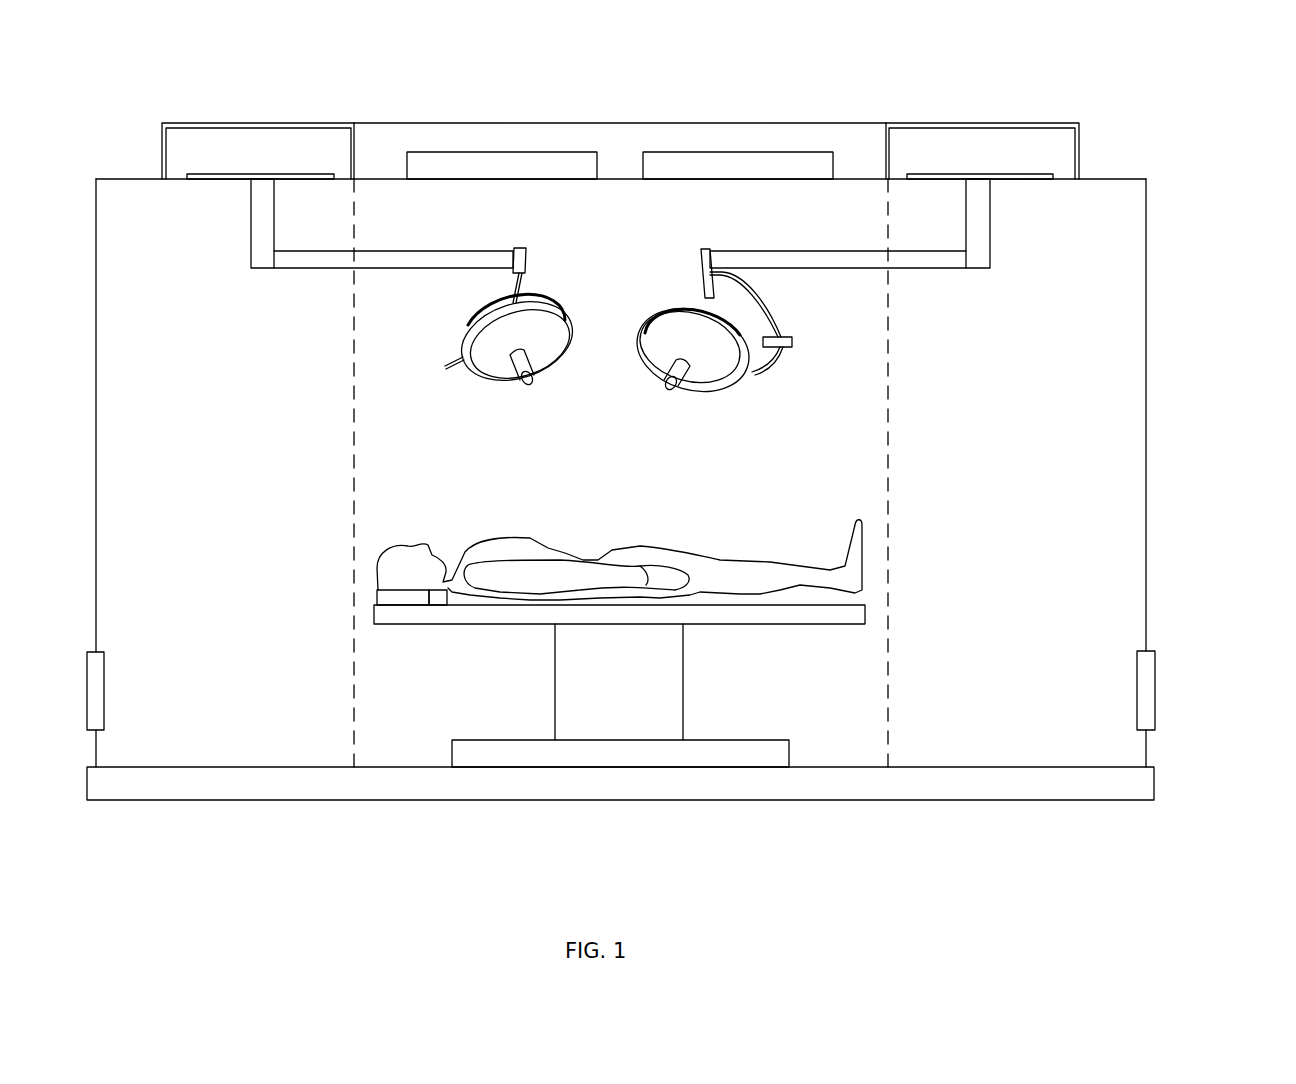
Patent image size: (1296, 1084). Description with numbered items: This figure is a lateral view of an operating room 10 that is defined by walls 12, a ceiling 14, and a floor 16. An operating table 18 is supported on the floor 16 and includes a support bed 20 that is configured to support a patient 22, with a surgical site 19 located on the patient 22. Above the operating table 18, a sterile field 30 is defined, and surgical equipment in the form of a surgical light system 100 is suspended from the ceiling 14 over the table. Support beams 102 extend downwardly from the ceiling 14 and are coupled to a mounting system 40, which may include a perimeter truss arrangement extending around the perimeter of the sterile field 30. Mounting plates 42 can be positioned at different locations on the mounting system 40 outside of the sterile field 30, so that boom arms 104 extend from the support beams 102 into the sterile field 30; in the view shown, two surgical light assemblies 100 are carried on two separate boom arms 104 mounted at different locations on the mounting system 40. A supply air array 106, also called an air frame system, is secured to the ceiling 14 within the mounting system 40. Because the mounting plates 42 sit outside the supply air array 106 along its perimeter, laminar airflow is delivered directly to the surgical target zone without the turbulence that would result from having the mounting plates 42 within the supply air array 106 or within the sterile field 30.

The operating room 10 is at (1200, 90).
The walls 12 is at (98, 291).
The ceiling 14 is at (1117, 181).
The floor 16 is at (305, 766).
The operating table 18 is at (468, 626).
The surgical site 19 is at (585, 548).
The support bed 20 is at (685, 694).
The patient 22 is at (465, 508).
The sterile field 30 is at (639, 227).
The mounting system 40 is at (235, 122).
The mounting plates 42 is at (220, 173).
The surgical light system 100 is at (478, 310).
The support beam 102 is at (250, 206).
The boom arms 104 is at (461, 250).
The supply air array 106 is at (528, 121).